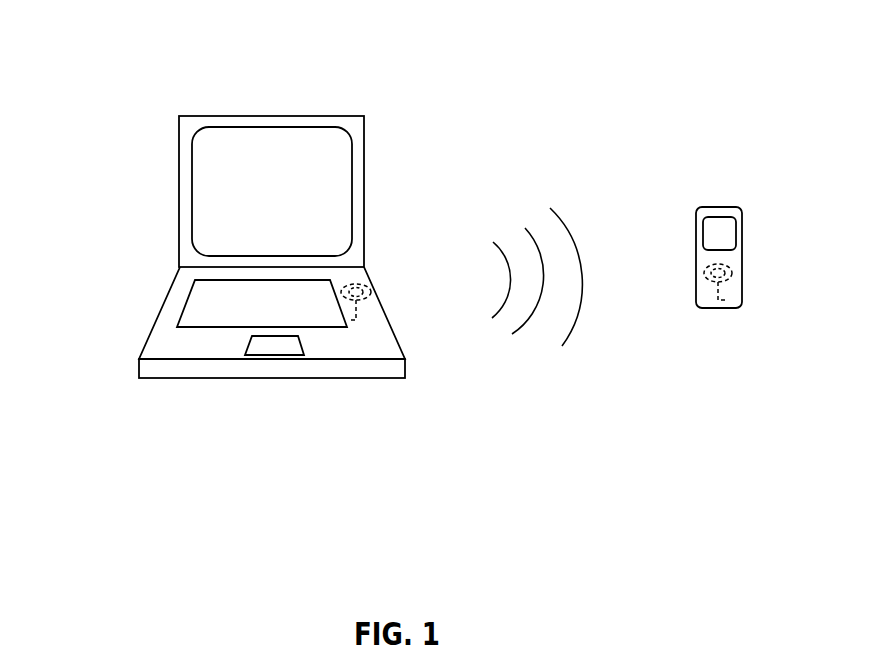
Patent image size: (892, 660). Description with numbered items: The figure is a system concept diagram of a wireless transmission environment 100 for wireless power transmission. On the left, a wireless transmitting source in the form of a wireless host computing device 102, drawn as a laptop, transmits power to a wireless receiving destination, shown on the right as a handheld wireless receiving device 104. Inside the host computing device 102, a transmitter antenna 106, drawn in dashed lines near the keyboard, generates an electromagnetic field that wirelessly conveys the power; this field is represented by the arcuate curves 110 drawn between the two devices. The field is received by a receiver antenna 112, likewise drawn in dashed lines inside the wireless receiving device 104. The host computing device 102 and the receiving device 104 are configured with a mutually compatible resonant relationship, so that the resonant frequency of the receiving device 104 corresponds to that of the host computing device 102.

The wireless transmission environment 100 is at (109, 71).
The wireless host computing device 102 is at (162, 308).
The wireless receiving device 104 is at (742, 238).
The transmitter antenna 106 is at (373, 290).
The arcuate curves 110 is at (537, 264).
The receiver antenna 112 is at (702, 275).